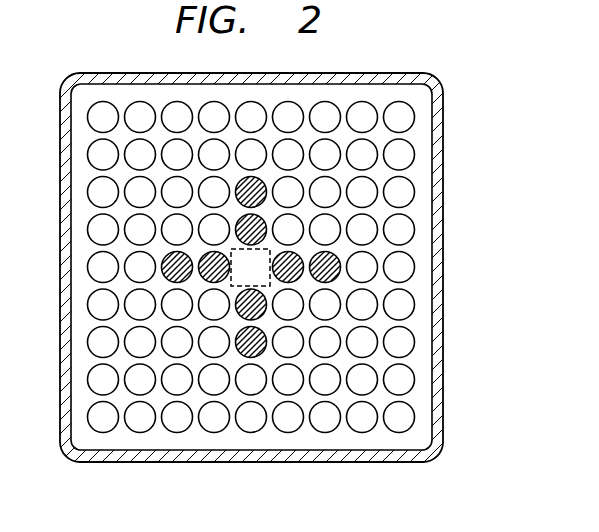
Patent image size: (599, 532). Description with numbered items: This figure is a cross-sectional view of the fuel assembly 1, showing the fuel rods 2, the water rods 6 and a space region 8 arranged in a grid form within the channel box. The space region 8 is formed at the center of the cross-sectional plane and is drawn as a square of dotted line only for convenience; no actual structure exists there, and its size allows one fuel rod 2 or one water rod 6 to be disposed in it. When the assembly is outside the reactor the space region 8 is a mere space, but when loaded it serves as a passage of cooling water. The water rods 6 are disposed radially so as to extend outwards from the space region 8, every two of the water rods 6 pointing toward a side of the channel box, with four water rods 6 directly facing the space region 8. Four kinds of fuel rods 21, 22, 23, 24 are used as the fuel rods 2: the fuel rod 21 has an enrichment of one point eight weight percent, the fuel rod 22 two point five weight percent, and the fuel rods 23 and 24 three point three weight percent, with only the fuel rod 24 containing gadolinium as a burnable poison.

The fuel assembly 1 is at (455, 133).
The fuel rod 2 is at (414, 272).
The water rod 6 is at (243, 356).
The space region 8 is at (231, 252).
The fuel rod 21 is at (251, 267).
The fuel rod 22 is at (251, 267).
The fuel rod 23 is at (251, 267).
The fuel rod 24 is at (251, 267).